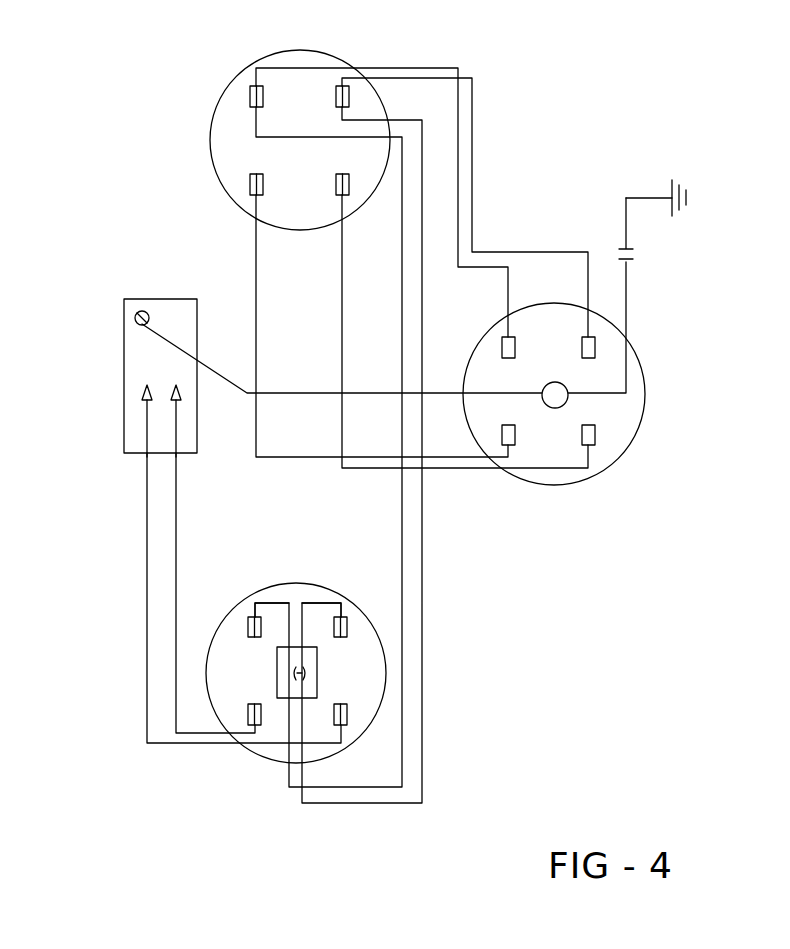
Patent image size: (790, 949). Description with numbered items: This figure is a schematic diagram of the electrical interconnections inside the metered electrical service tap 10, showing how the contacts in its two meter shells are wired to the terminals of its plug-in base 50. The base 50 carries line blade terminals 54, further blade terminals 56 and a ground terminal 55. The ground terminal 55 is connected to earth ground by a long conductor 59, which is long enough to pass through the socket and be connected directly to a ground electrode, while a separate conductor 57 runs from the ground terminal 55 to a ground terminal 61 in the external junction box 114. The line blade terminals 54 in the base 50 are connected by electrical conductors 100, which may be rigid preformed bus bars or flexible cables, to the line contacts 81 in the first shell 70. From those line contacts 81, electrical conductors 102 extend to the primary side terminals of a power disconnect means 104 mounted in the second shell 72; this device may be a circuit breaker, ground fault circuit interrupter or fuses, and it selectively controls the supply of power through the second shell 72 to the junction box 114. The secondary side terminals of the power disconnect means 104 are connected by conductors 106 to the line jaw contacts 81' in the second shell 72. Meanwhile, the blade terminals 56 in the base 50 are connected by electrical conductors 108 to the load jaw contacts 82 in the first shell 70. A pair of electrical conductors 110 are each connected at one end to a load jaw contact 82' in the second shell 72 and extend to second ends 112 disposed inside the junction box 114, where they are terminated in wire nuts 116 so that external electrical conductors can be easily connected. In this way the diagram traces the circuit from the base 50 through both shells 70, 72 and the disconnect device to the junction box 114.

The metered electrical service tap 10 is at (104, 218).
The base 50 is at (604, 476).
The line blade terminals 54 is at (502, 341).
The ground terminal 55 is at (568, 402).
The line blade terminals 56 is at (595, 441).
The conductor 57 is at (245, 392).
The long conductor 59 is at (624, 218).
The ground terminal 61 is at (142, 311).
The first shell 70 is at (203, 66).
The second shell 72 is at (258, 768).
The line contacts 81 is at (239, 57).
The load jaw contacts 82 is at (249, 221).
The line jaw contacts 81' is at (275, 613).
The load jaw contacts 82' is at (277, 699).
The electrical conductors 100 is at (472, 140).
The electrical conductors 102 is at (422, 768).
The power disconnect means 104 is at (264, 673).
The conductors 106 is at (322, 603).
The electrical conductors 108 is at (435, 470).
The electrical conductors 110 is at (173, 519).
The second ends 112 is at (176, 437).
The junction box 114 is at (122, 322).
The wire nuts 116 is at (176, 384).